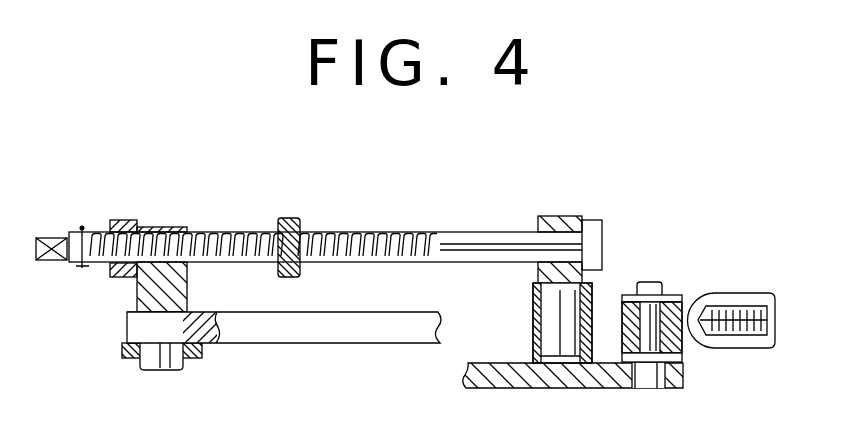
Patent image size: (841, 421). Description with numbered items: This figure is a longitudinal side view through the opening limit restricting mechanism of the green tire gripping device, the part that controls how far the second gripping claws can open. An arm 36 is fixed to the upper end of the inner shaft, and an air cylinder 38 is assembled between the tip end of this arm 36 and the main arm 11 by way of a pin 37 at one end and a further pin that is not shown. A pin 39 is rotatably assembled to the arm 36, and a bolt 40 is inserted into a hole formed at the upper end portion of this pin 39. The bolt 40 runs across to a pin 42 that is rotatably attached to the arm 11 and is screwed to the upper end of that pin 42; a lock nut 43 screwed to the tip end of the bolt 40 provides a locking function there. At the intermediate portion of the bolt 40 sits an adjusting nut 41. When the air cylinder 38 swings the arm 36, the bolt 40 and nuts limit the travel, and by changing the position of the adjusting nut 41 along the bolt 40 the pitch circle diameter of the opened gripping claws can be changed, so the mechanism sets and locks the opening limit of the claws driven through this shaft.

The arm 11 is at (282, 344).
The arm 36 is at (478, 388).
The pin 37 is at (653, 288).
The air cylinder 38 is at (745, 293).
The pin 39 is at (553, 215).
The bolt 40 is at (430, 230).
The adjusting nut 41 is at (290, 218).
The pin 42 is at (162, 225).
The lock nut 43 is at (122, 220).